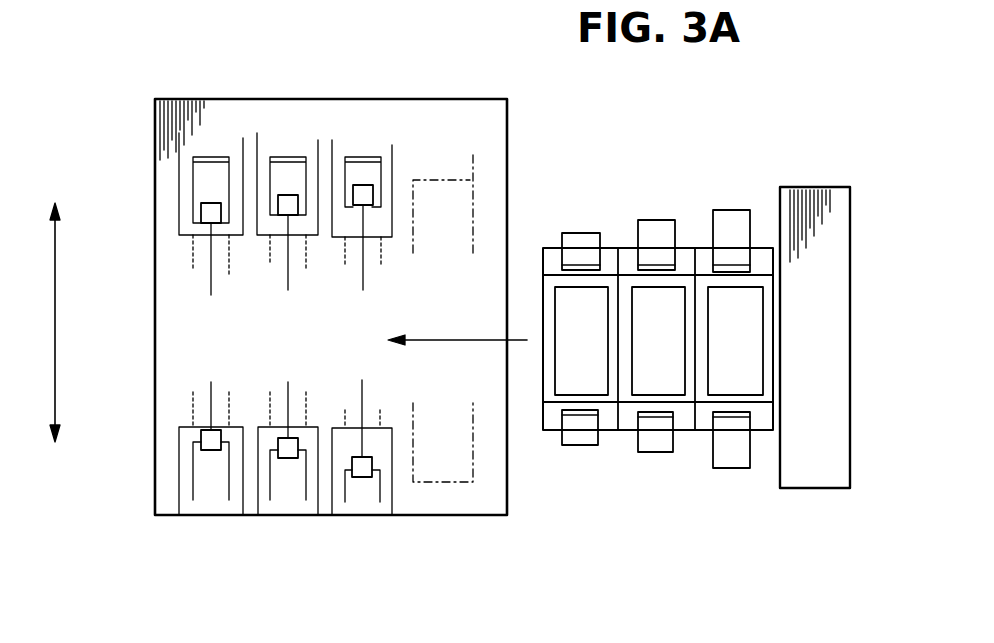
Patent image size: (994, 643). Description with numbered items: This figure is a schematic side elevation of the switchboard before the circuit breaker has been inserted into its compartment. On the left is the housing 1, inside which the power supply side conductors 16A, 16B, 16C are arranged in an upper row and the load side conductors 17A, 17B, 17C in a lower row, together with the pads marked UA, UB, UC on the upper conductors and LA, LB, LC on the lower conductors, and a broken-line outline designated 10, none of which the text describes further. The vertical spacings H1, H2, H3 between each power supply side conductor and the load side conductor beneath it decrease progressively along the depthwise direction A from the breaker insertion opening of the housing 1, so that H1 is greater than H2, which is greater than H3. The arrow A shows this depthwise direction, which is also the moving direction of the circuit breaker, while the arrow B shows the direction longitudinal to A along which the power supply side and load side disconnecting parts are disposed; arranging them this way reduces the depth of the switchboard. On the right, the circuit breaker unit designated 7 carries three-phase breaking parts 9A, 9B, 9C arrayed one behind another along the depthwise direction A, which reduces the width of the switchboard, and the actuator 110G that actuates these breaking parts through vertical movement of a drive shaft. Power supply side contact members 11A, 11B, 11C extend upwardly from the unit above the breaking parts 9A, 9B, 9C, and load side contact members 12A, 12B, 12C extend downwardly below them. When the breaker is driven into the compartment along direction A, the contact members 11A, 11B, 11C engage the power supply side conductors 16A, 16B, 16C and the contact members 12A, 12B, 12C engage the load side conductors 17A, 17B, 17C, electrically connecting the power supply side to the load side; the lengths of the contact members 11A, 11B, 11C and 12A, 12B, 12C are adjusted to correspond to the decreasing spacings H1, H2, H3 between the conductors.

The housing 1 is at (509, 133).
The magnetic head assembly 7 is at (681, 163).
The three-phase breaking part 9A is at (750, 342).
The three-phase breaking part 9B is at (645, 386).
The three-phase breaking part 9C is at (565, 385).
The dashed region 10 is at (449, 303).
The power supply side contact member 11A is at (378, 240).
The power supply side contact member 11B is at (304, 247).
The power supply side contact member 11C is at (193, 262).
The load side contact member 12A is at (378, 418).
The load side contact member 12B is at (268, 422).
The load side contact member 12C is at (193, 390).
The power supply side conductor 16A is at (363, 157).
The power supply side conductor 16B is at (288, 157).
The power supply side conductor 16C is at (211, 157).
The load side conductor 17A is at (357, 495).
The load side conductor 17B is at (297, 483).
The load side conductor 17C is at (207, 517).
The actuator 110G is at (818, 196).
The upper pad A UA is at (370, 187).
The upper pad B UB is at (293, 192).
The upper pad C UC is at (212, 210).
The lower pad A LA is at (366, 480).
The lower pad B LB is at (284, 458).
The lower pad C LC is at (210, 448).
The spacing H1 is at (362, 354).
The spacing H2 is at (288, 354).
The spacing H3 is at (205, 354).
The depthwise direction A is at (457, 324).
The longitudinal direction B is at (53, 306).